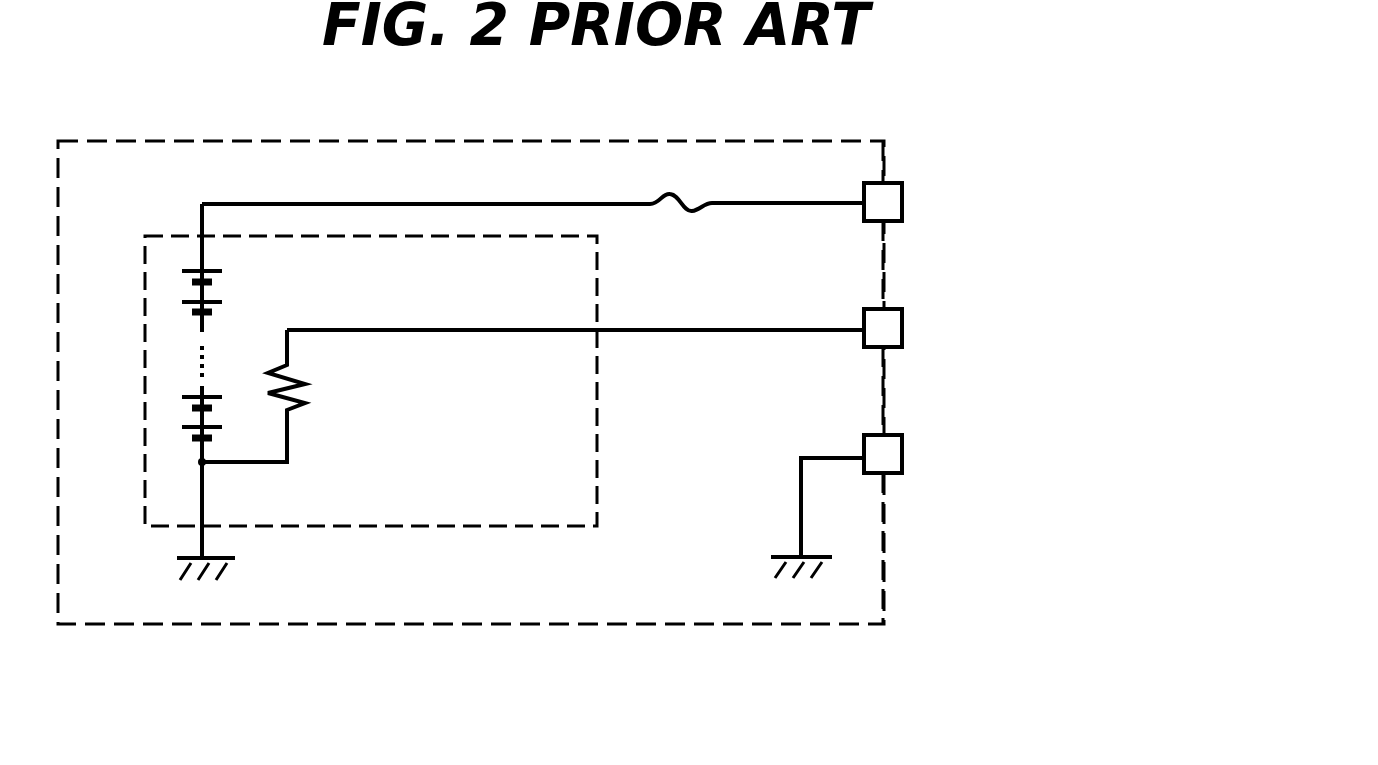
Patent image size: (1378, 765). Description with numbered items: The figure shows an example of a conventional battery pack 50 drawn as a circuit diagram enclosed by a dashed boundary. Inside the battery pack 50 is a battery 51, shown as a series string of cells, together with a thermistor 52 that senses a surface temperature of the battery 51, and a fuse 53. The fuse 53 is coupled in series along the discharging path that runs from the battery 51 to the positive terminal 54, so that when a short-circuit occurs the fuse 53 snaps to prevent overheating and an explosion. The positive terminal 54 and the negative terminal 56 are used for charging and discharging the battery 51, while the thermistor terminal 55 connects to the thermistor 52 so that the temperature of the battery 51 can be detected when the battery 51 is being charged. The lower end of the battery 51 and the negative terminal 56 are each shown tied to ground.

The battery pack 50 is at (482, 140).
The battery 51 is at (182, 266).
The thermistor 52 is at (305, 412).
The fuse 53 is at (695, 200).
The positive terminal 54 is at (903, 201).
The thermistor terminal 55 is at (903, 330).
The negative terminal 56 is at (903, 458).